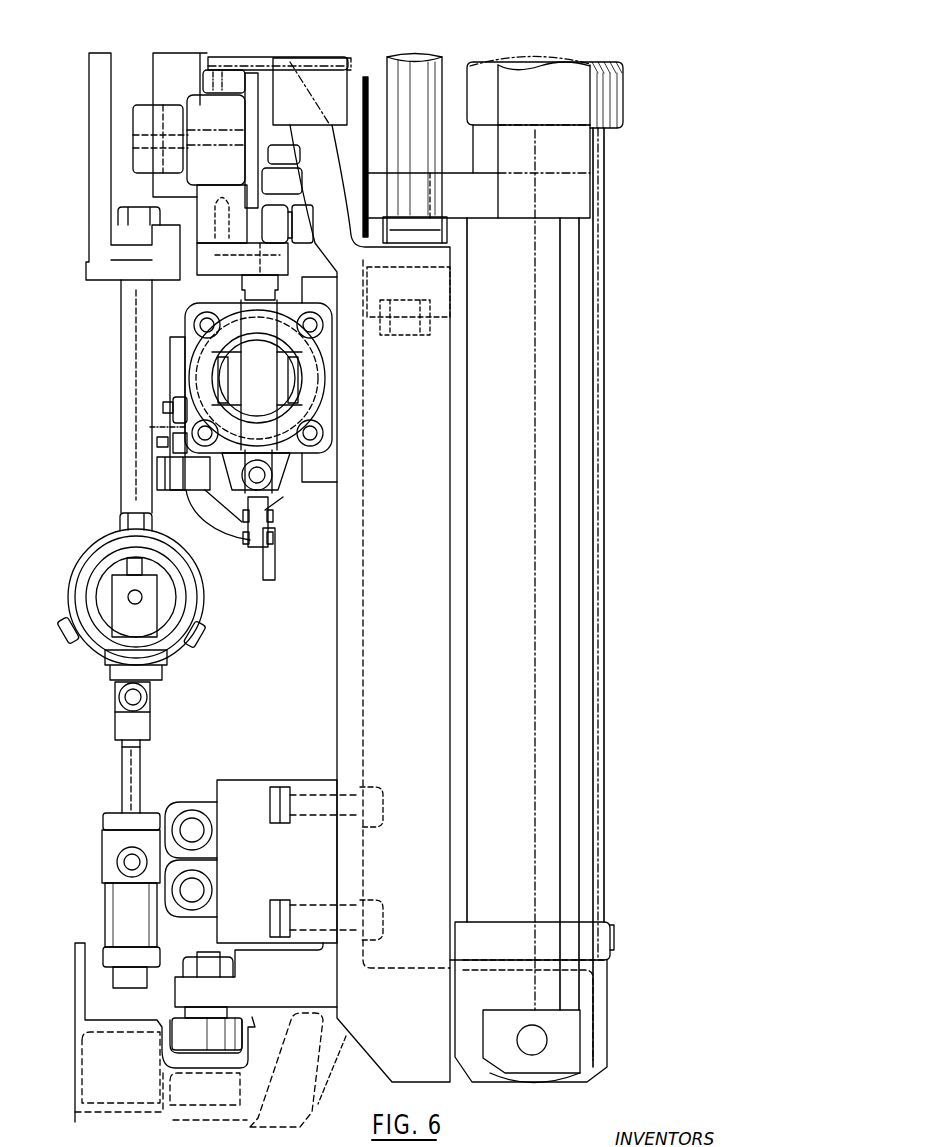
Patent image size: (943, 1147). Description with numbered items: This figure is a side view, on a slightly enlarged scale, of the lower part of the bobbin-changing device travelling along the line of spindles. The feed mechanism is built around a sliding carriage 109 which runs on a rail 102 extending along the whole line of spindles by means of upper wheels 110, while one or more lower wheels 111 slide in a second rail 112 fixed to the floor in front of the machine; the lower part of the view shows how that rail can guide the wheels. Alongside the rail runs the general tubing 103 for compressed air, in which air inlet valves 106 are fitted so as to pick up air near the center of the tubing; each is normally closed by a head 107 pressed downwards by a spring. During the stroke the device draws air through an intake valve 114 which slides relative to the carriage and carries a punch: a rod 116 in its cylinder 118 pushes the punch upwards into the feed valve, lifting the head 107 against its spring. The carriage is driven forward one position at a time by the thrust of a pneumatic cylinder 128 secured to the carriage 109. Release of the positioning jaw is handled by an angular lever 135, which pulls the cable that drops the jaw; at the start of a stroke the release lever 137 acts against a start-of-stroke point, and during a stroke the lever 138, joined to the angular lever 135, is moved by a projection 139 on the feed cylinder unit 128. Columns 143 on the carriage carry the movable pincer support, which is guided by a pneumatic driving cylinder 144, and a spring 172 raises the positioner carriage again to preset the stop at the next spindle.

The rail 102 is at (252, 90).
The general tubing 103 is at (180, 618).
The air inlet valve 106 is at (130, 618).
The head 107 is at (135, 596).
The sliding carriage 109 is at (348, 140).
The upper wheels 110 is at (225, 70).
The lower wheel 111 is at (246, 1038).
The second rail 112 is at (234, 981).
The intake valve 114 is at (138, 730).
The rod 116 is at (135, 786).
The cylinder 118 is at (125, 915).
The pneumatic cylinder 128 is at (150, 347).
The angular lever 135 is at (210, 512).
The release lever 137 is at (271, 572).
The lever 138 is at (150, 427).
The projection 139 is at (177, 373).
The columns 143 is at (420, 158).
The pneumatic driving cylinder 144 is at (560, 622).
The spring 172 is at (370, 124).